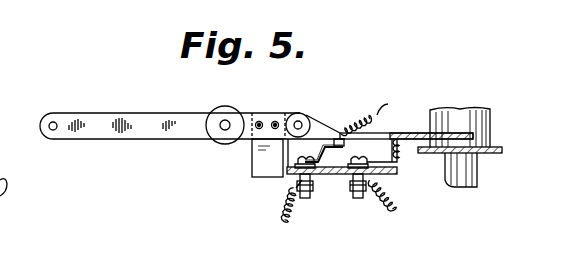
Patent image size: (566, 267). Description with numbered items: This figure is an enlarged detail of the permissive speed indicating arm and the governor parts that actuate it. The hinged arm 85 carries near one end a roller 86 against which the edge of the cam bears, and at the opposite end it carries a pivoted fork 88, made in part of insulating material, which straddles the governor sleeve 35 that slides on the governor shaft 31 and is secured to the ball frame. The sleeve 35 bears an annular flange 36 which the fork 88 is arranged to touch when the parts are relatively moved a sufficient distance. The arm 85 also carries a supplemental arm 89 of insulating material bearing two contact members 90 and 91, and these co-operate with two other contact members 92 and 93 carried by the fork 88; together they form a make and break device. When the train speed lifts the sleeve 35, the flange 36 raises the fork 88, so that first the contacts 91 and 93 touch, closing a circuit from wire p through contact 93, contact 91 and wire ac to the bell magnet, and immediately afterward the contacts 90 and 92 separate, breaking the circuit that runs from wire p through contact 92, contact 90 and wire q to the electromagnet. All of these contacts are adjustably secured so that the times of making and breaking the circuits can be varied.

The arm 85 is at (127, 105).
The roller 86 is at (220, 138).
The pivoted fork 88 is at (407, 131).
The supplemental arm 89 is at (258, 162).
The contact member 90 is at (333, 152).
The contact member 91 is at (382, 153).
The contact member 92 is at (342, 133).
The contact member 93 is at (399, 160).
The sleeve 35 is at (490, 132).
The annular flange 36 is at (500, 149).
The shaft 31 is at (477, 176).
The wire p is at (389, 109).
The wire q is at (285, 222).
The wire ac is at (395, 210).